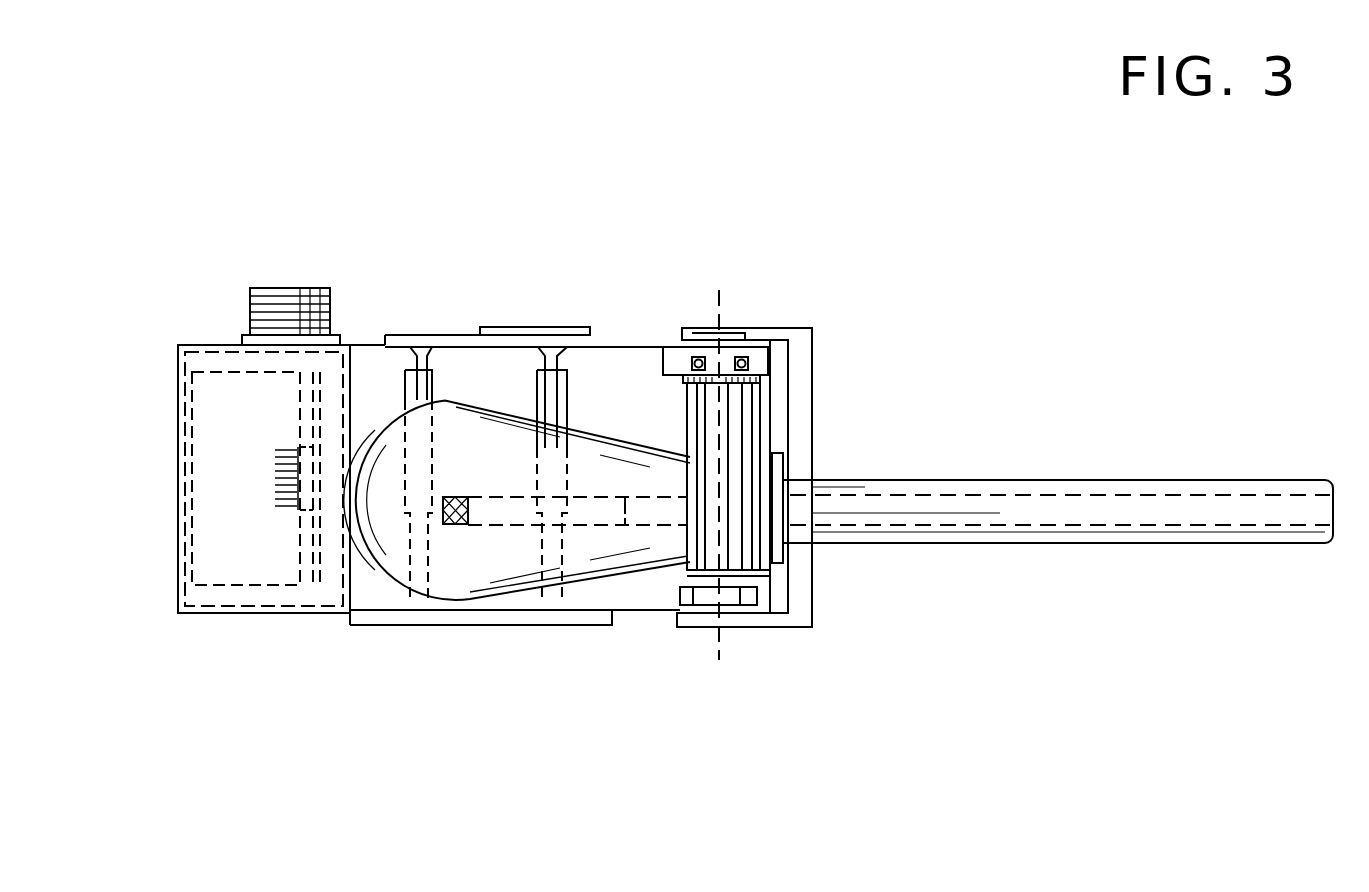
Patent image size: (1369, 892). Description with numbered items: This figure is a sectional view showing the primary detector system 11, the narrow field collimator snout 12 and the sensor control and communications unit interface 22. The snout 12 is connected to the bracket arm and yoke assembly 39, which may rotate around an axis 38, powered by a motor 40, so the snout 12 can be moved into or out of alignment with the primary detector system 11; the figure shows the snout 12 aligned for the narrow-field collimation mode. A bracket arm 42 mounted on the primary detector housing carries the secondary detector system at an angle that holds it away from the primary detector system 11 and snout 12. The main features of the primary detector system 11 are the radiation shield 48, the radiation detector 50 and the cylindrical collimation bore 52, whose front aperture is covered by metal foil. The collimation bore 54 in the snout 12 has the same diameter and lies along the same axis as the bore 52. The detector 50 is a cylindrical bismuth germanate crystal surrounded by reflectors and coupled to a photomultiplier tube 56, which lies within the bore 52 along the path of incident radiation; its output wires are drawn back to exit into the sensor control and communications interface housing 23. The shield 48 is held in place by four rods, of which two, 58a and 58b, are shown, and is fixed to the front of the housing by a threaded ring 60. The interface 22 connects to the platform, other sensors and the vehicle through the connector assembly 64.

The primary detector system 11 is at (540, 632).
The narrow field collimator snout 12 is at (1088, 546).
The sensor control and communications unit interface 22 is at (205, 632).
The sensor control and communications interface housing 23 is at (312, 615).
The axis 38 is at (722, 320).
The bracket arm and yoke assembly 39 is at (812, 367).
The motor 40 is at (733, 440).
The bracket arm 42 is at (568, 335).
The radiation shield 48 is at (475, 583).
The radiation detector 50 is at (457, 497).
The cylindrical collimation bore 52 is at (662, 515).
The collimation bore 54 is at (1062, 508).
The photomultiplier tube 56 is at (585, 513).
The rod 58a is at (405, 395).
The rod 58b is at (537, 392).
The threaded ring 60 is at (778, 550).
The connector assembly 64 is at (248, 315).